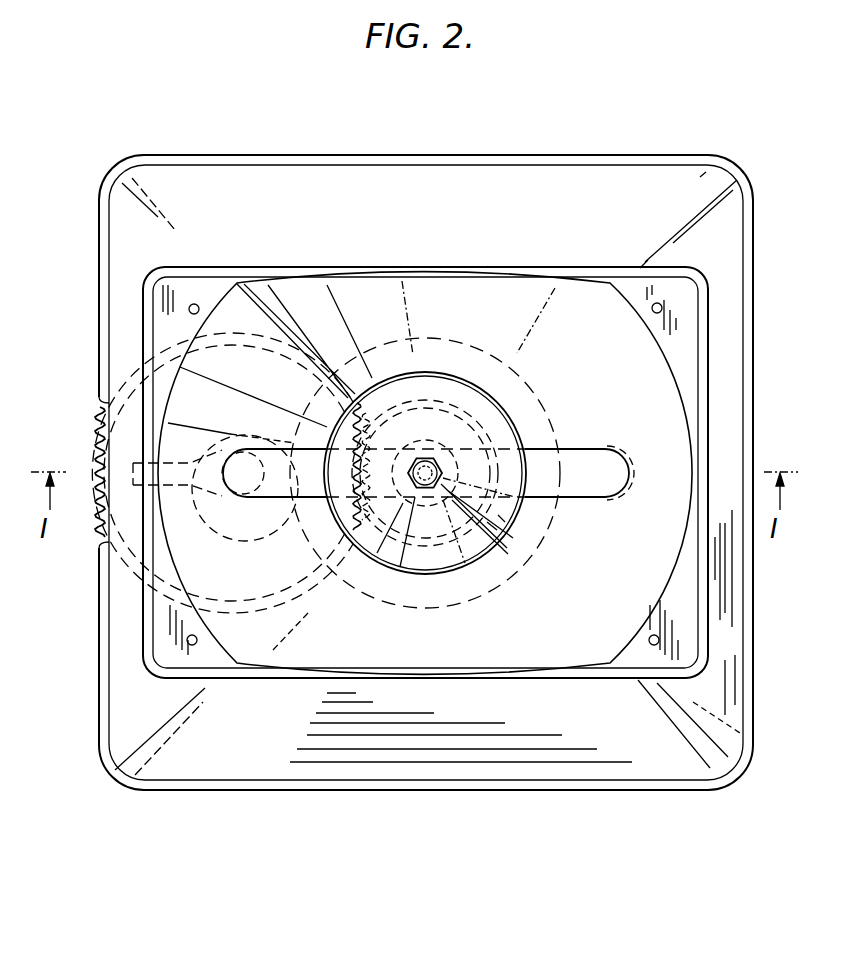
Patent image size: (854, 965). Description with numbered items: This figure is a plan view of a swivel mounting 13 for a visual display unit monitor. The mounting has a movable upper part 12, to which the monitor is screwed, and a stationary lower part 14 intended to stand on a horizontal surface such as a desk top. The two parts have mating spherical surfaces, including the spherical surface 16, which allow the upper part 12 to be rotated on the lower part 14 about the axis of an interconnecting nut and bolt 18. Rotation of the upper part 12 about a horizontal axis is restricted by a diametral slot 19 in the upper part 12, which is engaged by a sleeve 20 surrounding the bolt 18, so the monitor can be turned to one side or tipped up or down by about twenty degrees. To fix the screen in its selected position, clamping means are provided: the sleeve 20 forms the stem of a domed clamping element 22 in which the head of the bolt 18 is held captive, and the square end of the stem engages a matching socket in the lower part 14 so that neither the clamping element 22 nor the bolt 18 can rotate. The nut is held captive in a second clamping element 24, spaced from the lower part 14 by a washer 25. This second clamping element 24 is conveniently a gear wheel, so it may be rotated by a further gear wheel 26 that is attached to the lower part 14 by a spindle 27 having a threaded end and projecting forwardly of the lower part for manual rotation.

The movable upper part 12 is at (241, 674).
The swivel mounting 13 is at (286, 797).
The stationary lower part 14 is at (130, 715).
The spherical surface 16 is at (305, 463).
The bolt 18 is at (428, 458).
The diametral slot 19 is at (279, 487).
The sleeve 20 is at (412, 457).
The domed clamping element 22 is at (519, 378).
The second clamping element 24 is at (429, 537).
The washer 25 is at (378, 560).
The further gear wheel 26 is at (95, 440).
The spindle 27 is at (172, 551).